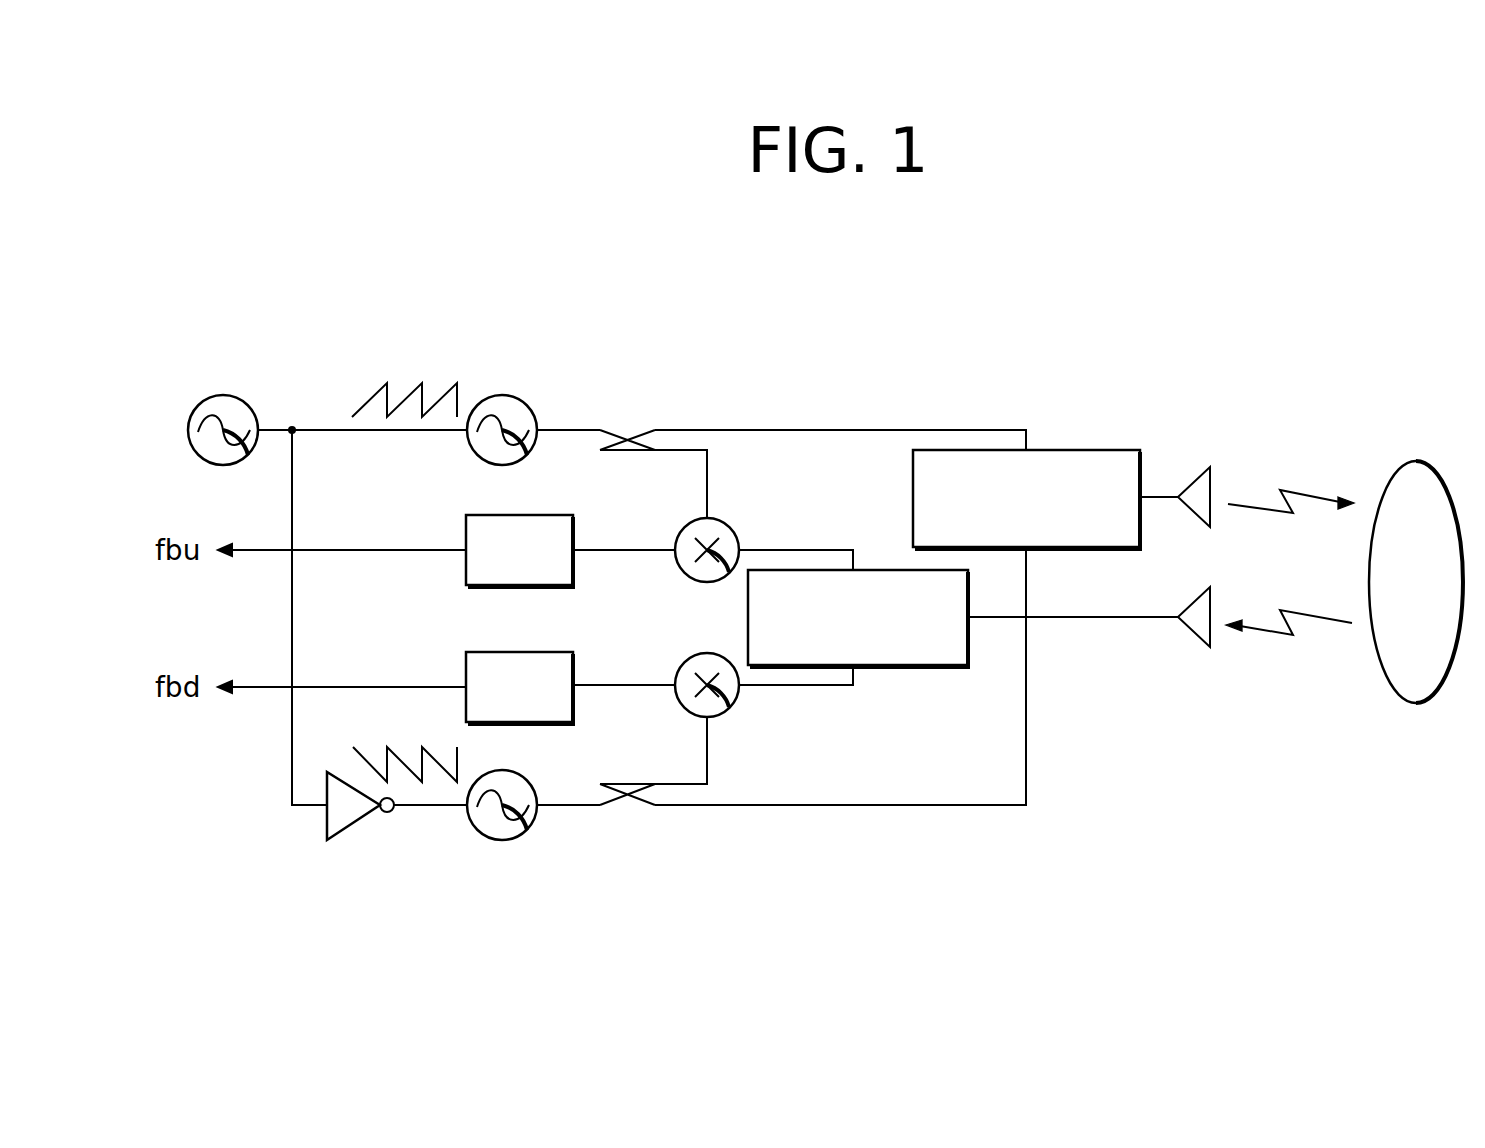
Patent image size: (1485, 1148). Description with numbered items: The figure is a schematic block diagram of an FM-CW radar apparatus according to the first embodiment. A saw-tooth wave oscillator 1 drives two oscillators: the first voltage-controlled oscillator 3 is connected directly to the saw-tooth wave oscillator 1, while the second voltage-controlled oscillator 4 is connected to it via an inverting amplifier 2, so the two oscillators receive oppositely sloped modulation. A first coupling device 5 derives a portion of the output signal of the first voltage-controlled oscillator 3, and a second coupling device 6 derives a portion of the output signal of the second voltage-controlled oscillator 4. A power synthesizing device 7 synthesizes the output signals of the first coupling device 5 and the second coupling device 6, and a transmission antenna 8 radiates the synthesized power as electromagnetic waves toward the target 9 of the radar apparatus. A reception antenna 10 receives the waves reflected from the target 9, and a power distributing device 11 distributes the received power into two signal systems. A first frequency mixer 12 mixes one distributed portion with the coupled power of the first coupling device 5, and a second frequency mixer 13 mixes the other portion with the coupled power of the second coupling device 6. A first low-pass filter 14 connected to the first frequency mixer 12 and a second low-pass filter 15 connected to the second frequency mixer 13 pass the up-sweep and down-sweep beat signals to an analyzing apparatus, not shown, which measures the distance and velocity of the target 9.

The saw-tooth wave oscillator 1 is at (230, 396).
The inverting amplifier 2 is at (360, 822).
The first voltage-controlled oscillator 3 is at (513, 396).
The second voltage-controlled oscillator 4 is at (517, 840).
The first coupling device 5 is at (633, 428).
The second coupling device 6 is at (628, 806).
The power synthesizing device 7 is at (1113, 449).
The transmission antenna 8 is at (1195, 477).
The target 9 is at (1441, 478).
The reception antenna 10 is at (1192, 632).
The power distributing device 11 is at (893, 669).
The first frequency mixer 12 is at (733, 522).
The second frequency mixer 13 is at (731, 709).
The first low-pass filter 14 is at (543, 514).
The second low-pass filter 15 is at (566, 651).